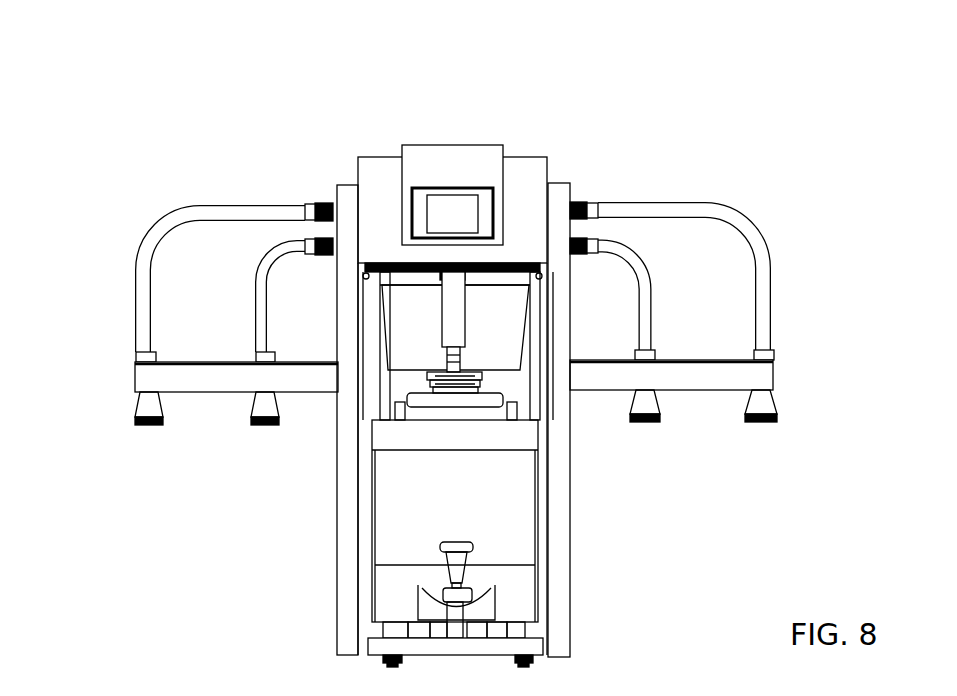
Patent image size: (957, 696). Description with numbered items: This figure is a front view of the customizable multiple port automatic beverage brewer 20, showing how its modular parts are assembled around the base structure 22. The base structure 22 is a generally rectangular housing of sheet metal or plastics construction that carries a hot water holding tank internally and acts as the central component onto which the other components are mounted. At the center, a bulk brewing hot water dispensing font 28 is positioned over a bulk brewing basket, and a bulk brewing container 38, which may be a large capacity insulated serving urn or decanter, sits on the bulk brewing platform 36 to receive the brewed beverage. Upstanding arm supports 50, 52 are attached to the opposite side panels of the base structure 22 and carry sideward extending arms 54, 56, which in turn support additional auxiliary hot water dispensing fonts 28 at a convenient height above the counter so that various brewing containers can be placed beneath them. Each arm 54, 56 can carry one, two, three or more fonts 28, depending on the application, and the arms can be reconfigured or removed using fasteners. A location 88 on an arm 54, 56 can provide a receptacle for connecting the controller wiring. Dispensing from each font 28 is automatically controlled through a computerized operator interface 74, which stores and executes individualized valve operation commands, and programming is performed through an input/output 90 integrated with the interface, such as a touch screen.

The customizable multiple port automatic beverage brewer 20 is at (673, 113).
The base structure 22 is at (540, 137).
The hot water dispensing font 28 is at (132, 425).
The bulk brewing platform 36 is at (543, 638).
The bulk brewing container 38 is at (535, 500).
The arm support 50 is at (342, 570).
The arm support 52 is at (570, 563).
The arm 54 is at (189, 368).
The arm 56 is at (773, 377).
The computerized operator interface 74 is at (450, 150).
The location 88 is at (455, 282).
The input/output 90 is at (468, 210).